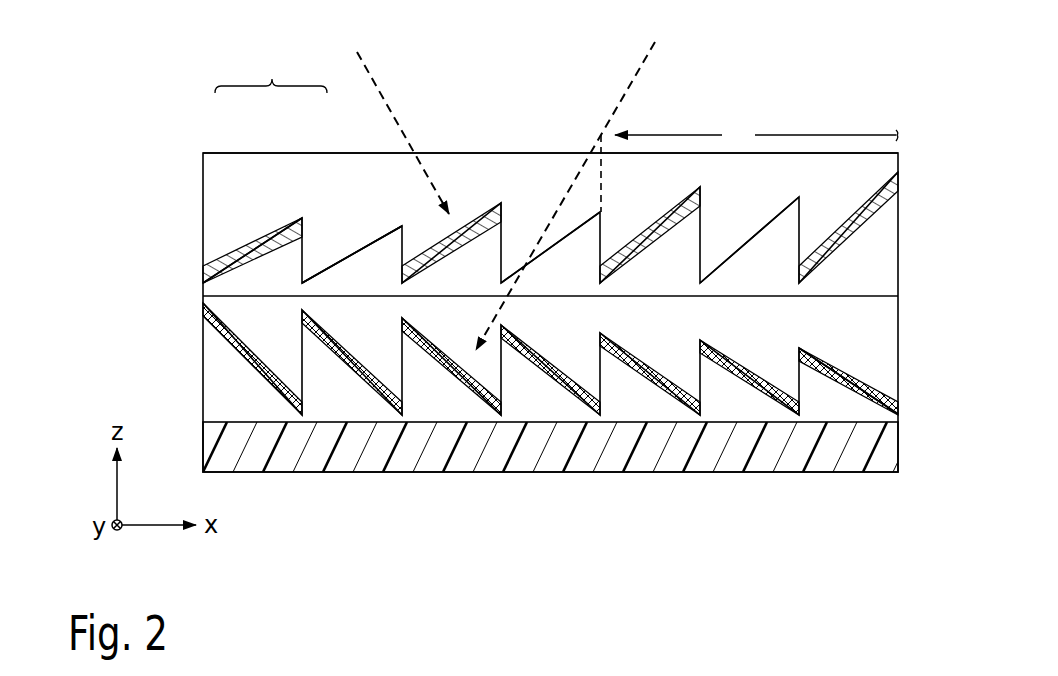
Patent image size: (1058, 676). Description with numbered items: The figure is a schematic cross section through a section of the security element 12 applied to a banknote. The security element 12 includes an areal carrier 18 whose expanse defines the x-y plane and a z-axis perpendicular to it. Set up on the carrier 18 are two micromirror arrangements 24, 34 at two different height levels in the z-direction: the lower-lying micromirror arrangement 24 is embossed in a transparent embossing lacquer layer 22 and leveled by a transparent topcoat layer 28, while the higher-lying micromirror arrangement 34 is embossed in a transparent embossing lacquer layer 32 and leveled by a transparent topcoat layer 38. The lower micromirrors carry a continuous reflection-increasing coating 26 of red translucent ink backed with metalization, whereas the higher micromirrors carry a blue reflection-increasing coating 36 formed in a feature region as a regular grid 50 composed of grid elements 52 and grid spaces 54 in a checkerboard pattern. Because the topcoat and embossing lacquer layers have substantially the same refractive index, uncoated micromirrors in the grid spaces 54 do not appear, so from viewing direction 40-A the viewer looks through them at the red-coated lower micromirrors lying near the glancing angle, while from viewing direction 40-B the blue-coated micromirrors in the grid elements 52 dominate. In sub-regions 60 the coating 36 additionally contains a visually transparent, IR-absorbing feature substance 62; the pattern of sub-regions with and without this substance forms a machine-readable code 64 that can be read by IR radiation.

The security element 12 is at (134, 82).
The areal carrier 18 is at (886, 453).
The transparent embossing lacquer layer 22 is at (216, 378).
The micromirror arrangement 24 is at (320, 340).
The reflection-increasing coating 26 is at (872, 382).
The transparent topcoat layer 28 is at (886, 321).
The transparent embossing lacquer layer 32 is at (886, 269).
The micromirror arrangement 34 is at (482, 234).
The reflection-increasing coating 36 is at (228, 256).
The transparent topcoat layer 38 is at (216, 189).
The viewing direction 40-A is at (641, 65).
The viewing direction 40-B is at (400, 45).
The regular grid 50 is at (271, 70).
The grid elements 52 is at (262, 228).
The grid spaces 54 is at (337, 258).
The sub-regions 60 is at (749, 166).
The machine-readable feature substance 62 is at (641, 243).
The machine-readable code 64 is at (874, 94).